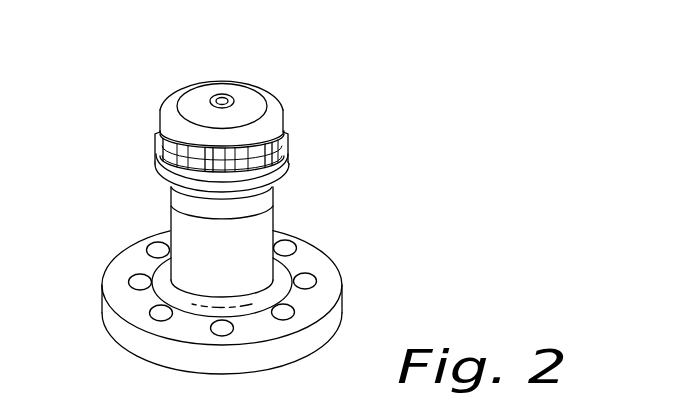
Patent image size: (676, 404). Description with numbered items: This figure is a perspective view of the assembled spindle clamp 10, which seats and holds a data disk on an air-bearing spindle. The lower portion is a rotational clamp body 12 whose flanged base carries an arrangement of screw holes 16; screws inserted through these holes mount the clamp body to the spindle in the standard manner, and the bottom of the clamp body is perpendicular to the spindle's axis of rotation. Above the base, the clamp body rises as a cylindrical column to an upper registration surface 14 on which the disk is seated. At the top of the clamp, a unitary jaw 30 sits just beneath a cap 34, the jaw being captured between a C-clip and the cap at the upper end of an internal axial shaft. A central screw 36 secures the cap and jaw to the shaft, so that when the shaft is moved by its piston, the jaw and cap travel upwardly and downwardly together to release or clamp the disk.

The spindle clamp 10 is at (300, 46).
The rotational clamp body 12 is at (275, 217).
The upper registration surface 14 is at (290, 163).
The screw holes 16 is at (155, 310).
The unitary jaw 30 is at (165, 157).
The cap 34 is at (202, 90).
The screw 36 is at (226, 97).